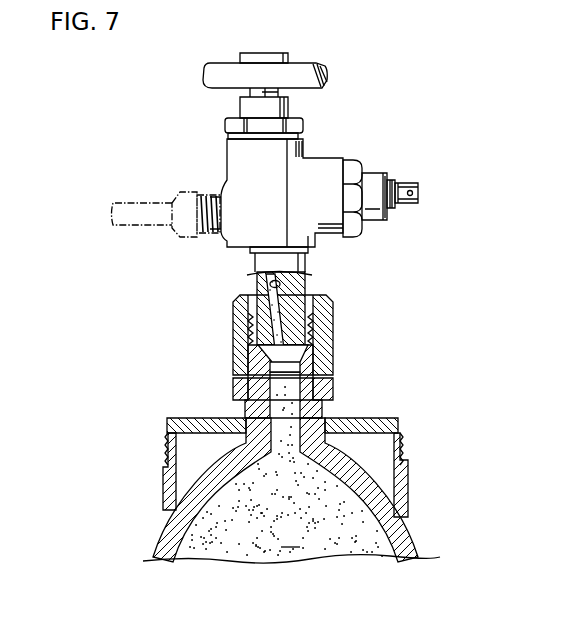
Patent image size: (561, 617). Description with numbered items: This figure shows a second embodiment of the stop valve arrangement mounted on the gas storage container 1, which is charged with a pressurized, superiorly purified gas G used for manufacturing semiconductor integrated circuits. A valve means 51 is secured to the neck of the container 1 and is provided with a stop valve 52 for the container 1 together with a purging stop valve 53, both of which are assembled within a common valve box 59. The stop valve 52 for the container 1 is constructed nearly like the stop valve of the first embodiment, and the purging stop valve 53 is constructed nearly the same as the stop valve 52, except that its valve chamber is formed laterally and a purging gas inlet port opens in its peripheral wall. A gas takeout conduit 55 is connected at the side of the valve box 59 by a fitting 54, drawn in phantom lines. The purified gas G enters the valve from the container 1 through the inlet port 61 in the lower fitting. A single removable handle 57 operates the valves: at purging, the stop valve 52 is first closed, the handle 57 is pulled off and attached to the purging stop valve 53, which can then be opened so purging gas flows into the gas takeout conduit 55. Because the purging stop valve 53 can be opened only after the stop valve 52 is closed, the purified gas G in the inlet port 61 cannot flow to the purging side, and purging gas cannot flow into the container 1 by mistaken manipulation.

The gas storage container 1 is at (410, 523).
The valve means 51 is at (410, 72).
The stop valve for the container 52 is at (308, 140).
The purging stop valve 53 is at (342, 158).
The connecting fitting 54 is at (212, 192).
The gas takeout conduit 55 is at (150, 203).
The handle 57 is at (318, 63).
The common valve box 59 is at (226, 142).
The inlet port 61 is at (280, 283).